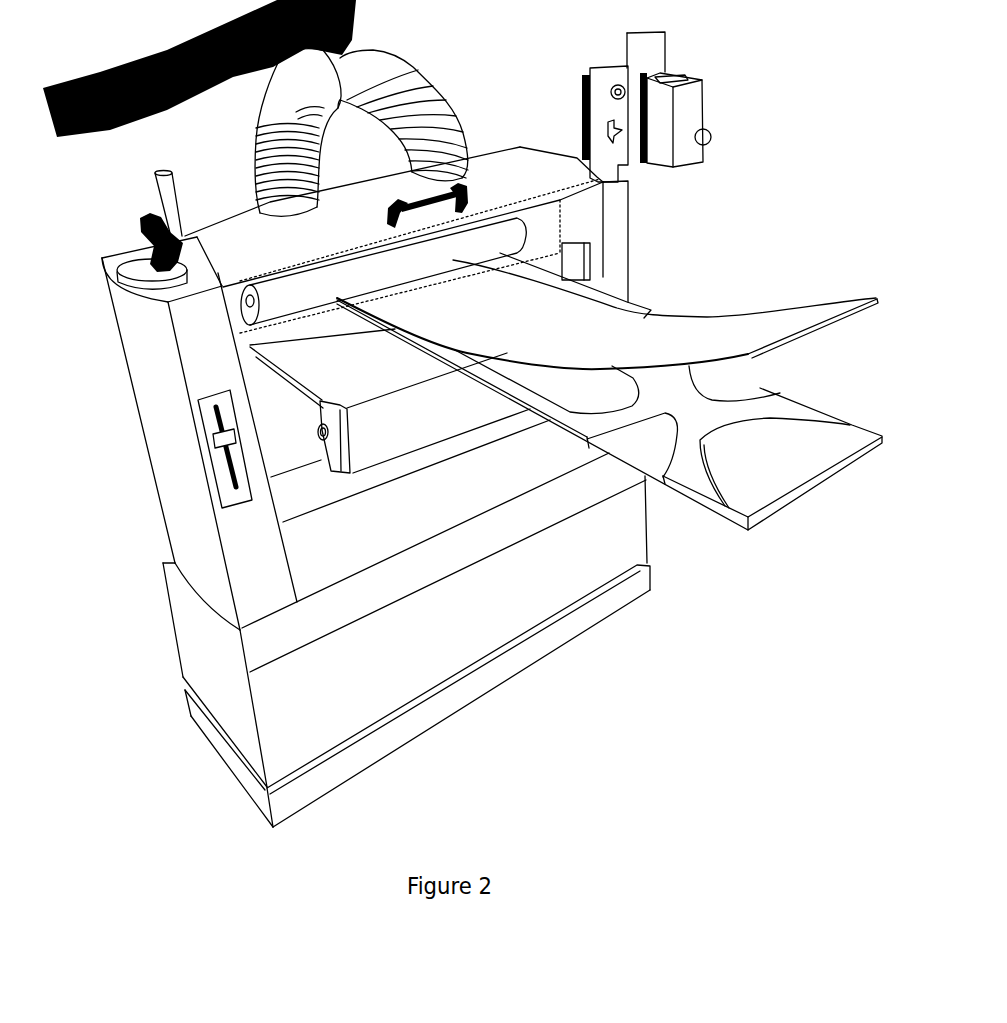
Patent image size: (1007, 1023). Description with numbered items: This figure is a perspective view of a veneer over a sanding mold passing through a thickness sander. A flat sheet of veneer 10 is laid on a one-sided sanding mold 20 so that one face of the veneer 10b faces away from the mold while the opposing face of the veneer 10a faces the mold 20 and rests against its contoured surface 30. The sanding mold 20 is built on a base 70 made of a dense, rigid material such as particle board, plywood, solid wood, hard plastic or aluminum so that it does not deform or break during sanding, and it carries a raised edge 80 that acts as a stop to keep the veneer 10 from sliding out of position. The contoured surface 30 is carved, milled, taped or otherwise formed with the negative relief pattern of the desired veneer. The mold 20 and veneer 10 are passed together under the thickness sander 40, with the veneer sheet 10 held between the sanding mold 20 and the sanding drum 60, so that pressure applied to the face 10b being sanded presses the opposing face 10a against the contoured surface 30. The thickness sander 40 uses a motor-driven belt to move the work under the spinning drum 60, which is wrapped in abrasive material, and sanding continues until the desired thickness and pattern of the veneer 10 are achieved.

The veneer 10 is at (720, 325).
The opposing face of the veneer 10a is at (773, 347).
The face of the veneer 10b is at (683, 325).
The sanding mold 20 is at (712, 510).
The contoured surface 30 is at (790, 412).
The thickness sander 40 is at (533, 160).
The sanding drum 60 is at (448, 258).
The base 70 is at (685, 493).
The raised edge 80 is at (813, 467).